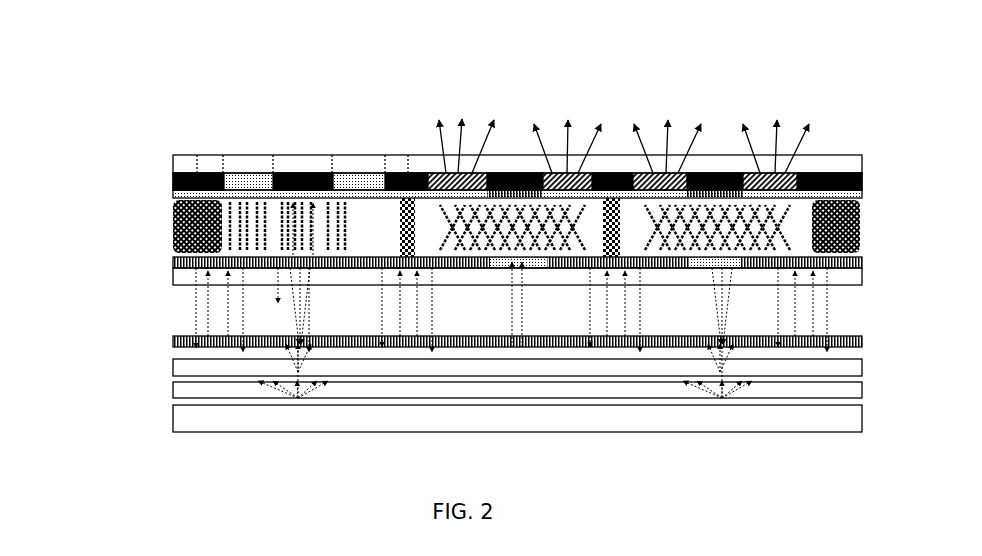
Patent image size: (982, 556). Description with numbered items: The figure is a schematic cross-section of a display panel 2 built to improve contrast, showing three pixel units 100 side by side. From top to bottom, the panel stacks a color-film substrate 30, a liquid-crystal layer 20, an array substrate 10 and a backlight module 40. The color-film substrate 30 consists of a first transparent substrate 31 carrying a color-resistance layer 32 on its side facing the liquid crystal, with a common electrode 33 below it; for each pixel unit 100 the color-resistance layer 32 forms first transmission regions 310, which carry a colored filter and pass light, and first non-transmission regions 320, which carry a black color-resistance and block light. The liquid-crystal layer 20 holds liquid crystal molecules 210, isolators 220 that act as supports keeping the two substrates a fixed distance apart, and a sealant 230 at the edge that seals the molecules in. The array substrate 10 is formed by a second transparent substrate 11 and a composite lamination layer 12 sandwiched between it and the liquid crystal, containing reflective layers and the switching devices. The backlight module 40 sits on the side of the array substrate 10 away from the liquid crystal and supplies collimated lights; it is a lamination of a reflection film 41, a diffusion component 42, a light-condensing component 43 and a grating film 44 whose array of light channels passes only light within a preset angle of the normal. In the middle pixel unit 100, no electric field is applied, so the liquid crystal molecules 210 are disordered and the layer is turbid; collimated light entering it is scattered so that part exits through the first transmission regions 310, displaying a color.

The display panel 2 is at (57, 34).
The pixel unit 100 is at (202, 93).
The first transmission region 310 is at (249, 151).
The first non-transmission region 320 is at (211, 151).
The color-film substrate 30 is at (63, 143).
The first transparent substrate 31 is at (173, 166).
The color-resistance layer 32 is at (173, 182).
The common electrode 33 is at (173, 196).
The liquid-crystal layer 20 is at (158, 227).
The liquid crystal molecules 210 is at (358, 250).
The isolator 220 is at (418, 243).
The sealant 230 is at (862, 233).
The array substrate 10 is at (81, 255).
The second transparent substrate 11 is at (173, 278).
The composite lamination layer 12 is at (173, 262).
The backlight module 40 is at (74, 427).
The reflection film 41 is at (173, 424).
The diffusion component 42 is at (173, 394).
The light-condensing component 43 is at (173, 372).
The grating film 44 is at (173, 342).